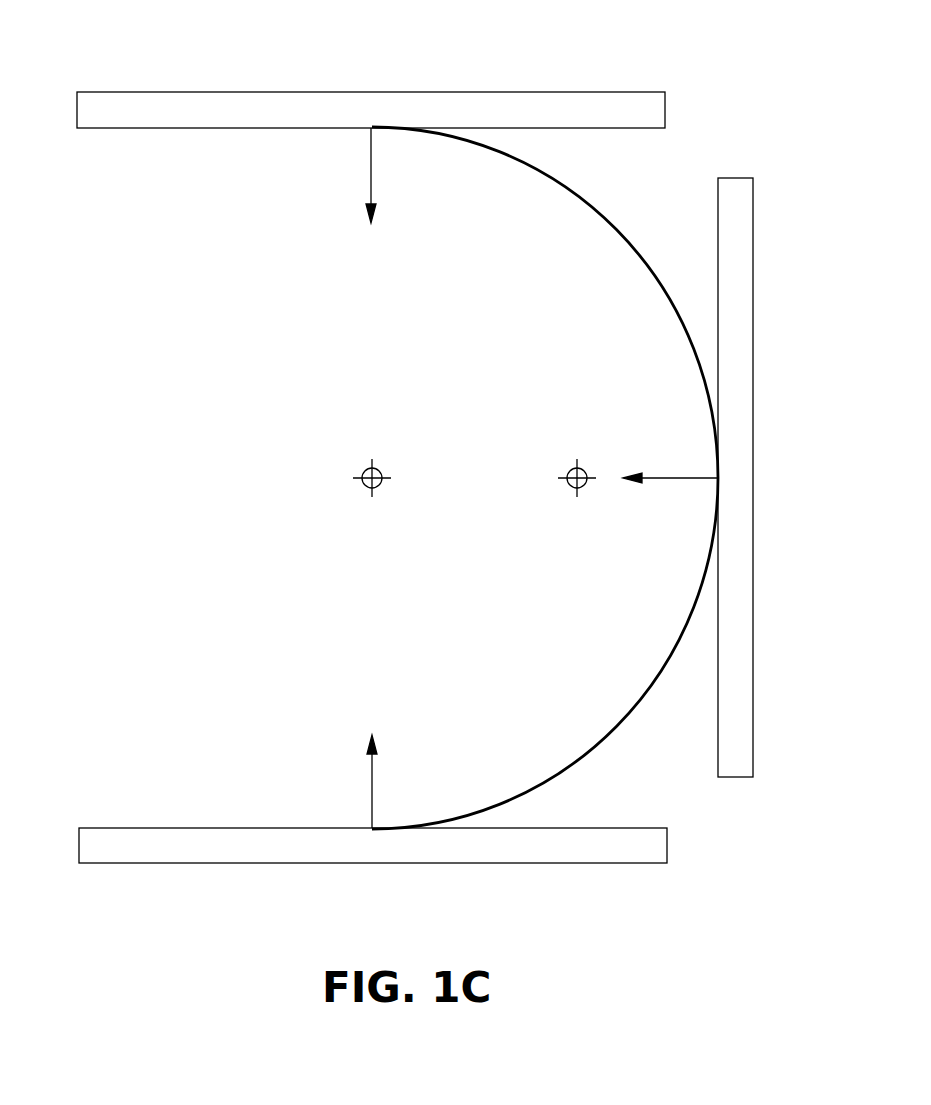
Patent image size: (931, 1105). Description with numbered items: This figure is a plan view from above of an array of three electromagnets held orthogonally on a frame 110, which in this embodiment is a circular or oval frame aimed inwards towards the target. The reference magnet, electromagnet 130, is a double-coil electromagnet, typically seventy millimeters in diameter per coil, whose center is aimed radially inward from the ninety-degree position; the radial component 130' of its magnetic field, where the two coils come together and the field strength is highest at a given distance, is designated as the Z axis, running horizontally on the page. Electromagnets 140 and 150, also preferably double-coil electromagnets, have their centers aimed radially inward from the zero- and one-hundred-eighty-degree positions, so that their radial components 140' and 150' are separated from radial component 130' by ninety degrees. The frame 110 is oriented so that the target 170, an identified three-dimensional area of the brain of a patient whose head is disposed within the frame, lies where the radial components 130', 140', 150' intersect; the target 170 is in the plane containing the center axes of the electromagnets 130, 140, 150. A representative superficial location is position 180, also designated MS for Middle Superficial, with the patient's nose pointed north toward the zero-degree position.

The frame 110 is at (618, 230).
The electromagnet 140 is at (371, 73).
The radial component 140' is at (316, 175).
The electromagnet 150 is at (373, 878).
The radial component 150' is at (307, 781).
The electromagnet 130 is at (760, 514).
The radial component 130' is at (661, 528).
The target 170 is at (363, 488).
The position MS (Middle Superficial) 180 is at (567, 478).